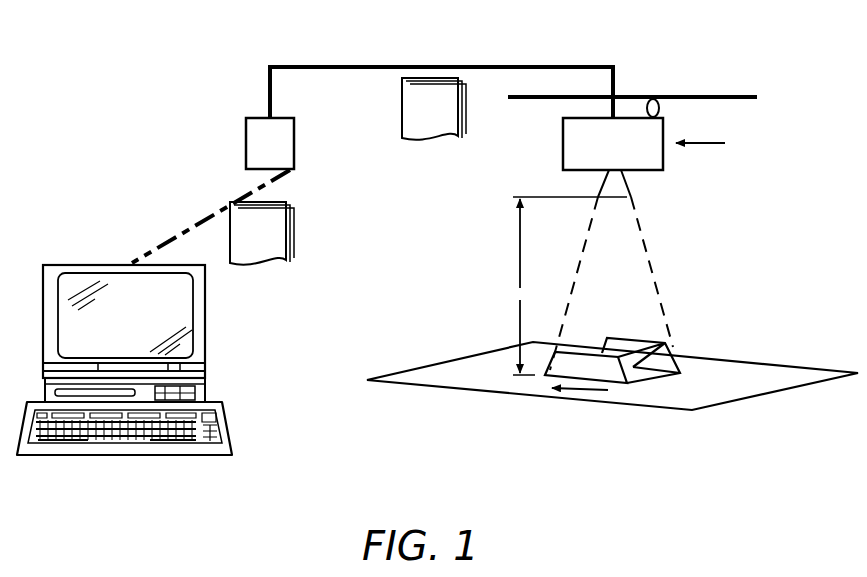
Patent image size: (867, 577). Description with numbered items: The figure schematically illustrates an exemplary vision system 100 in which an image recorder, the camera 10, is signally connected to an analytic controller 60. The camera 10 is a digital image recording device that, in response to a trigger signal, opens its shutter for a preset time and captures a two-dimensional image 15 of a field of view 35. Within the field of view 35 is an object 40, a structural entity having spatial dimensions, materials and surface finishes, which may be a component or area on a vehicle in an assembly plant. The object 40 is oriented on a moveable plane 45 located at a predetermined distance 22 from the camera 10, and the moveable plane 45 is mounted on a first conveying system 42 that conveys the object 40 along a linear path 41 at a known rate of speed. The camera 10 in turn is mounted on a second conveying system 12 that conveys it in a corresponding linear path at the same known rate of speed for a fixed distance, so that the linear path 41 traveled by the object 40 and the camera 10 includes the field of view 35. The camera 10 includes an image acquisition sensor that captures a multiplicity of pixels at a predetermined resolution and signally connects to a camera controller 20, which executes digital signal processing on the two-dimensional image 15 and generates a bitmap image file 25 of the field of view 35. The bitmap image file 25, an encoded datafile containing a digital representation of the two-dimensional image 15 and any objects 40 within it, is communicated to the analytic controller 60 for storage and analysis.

The vision system 100 is at (190, 182).
The camera 10 is at (600, 157).
The second conveying system 12 is at (695, 95).
The 2D image 15 is at (418, 121).
The camera controller 20 is at (256, 156).
The predetermined distance 22 is at (565, 286).
The bitmap image file 25 is at (245, 249).
The field of view 35 is at (657, 286).
The object 40 is at (732, 305).
The linear path 41 is at (583, 388).
The first conveying system 42 is at (612, 393).
The moveable plane 45 is at (477, 380).
The analytic controller 60 is at (113, 327).